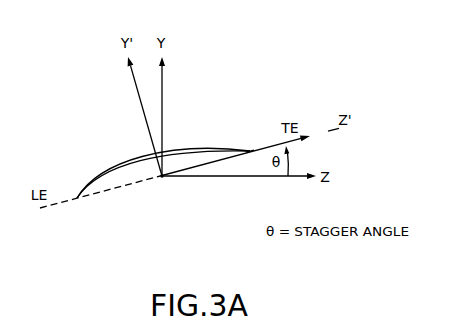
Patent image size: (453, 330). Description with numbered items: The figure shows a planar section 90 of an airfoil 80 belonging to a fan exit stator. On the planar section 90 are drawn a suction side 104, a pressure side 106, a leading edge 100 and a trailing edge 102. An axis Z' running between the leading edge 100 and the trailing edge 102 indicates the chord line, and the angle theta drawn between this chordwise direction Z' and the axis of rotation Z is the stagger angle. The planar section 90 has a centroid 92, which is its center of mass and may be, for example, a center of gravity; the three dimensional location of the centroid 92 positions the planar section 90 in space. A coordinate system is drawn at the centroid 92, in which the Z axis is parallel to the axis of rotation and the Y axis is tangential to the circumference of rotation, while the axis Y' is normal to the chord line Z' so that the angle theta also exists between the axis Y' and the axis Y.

The airfoil 80 is at (155, 153).
The planar section 90 is at (94, 103).
The centroid 92 is at (164, 178).
The leading edge 100 is at (77, 199).
The trailing edge 102 is at (252, 149).
The suction side 104 is at (190, 148).
The pressure side 106 is at (132, 164).